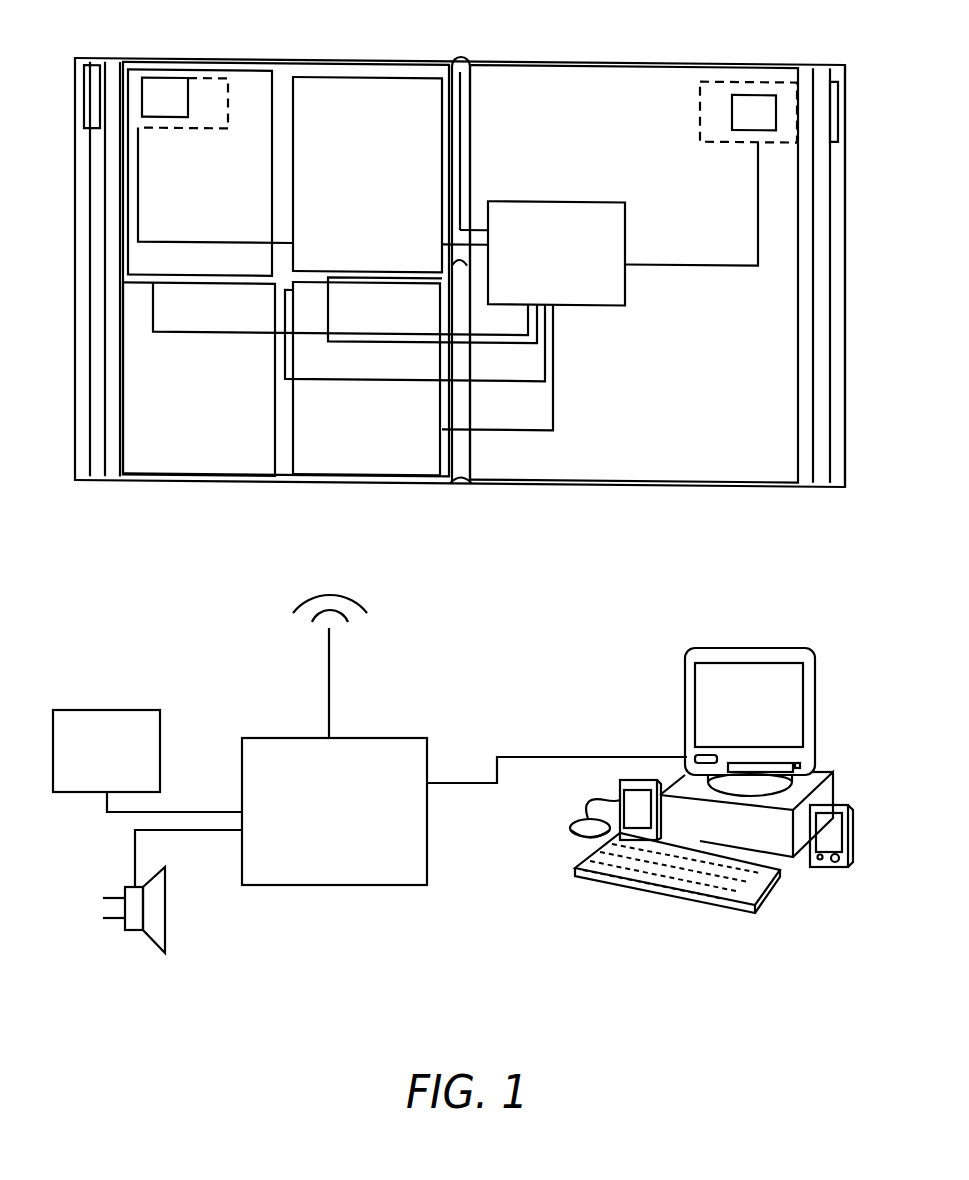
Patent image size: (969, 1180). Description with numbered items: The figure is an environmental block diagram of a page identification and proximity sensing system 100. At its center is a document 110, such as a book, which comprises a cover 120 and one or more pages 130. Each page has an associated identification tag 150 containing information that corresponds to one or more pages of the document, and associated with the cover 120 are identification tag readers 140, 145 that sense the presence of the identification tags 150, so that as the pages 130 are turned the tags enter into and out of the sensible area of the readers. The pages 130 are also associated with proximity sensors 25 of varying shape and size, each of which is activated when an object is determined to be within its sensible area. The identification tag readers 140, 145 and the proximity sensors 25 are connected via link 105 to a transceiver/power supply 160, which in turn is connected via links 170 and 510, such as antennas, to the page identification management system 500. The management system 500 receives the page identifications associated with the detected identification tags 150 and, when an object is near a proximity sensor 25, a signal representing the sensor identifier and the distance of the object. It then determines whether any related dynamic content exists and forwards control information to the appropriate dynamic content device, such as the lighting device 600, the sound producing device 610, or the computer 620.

The proximity sensor 25 is at (249, 66).
The page identification system 100 is at (500, 937).
The link 105 is at (178, 239).
The document 110 is at (595, 59).
The cover 120 is at (846, 393).
The pages 130 is at (799, 289).
The identification tag reader 140 is at (97, 56).
The identification tag reader 145 is at (727, 76).
The identification tag 150 is at (163, 87).
The transceiver/power supply 160 is at (585, 197).
The link 170 is at (462, 134).
The page identification management system 500 is at (405, 738).
The link 510 is at (329, 683).
The lighting device 600 is at (105, 710).
The sound producing device 610 is at (167, 917).
The computer 620 is at (750, 648).